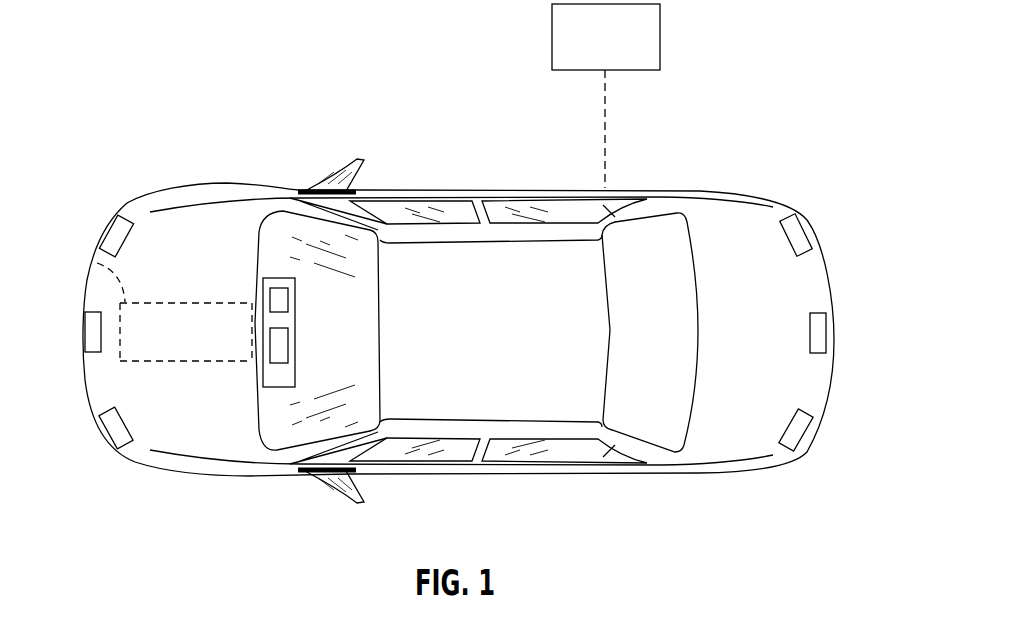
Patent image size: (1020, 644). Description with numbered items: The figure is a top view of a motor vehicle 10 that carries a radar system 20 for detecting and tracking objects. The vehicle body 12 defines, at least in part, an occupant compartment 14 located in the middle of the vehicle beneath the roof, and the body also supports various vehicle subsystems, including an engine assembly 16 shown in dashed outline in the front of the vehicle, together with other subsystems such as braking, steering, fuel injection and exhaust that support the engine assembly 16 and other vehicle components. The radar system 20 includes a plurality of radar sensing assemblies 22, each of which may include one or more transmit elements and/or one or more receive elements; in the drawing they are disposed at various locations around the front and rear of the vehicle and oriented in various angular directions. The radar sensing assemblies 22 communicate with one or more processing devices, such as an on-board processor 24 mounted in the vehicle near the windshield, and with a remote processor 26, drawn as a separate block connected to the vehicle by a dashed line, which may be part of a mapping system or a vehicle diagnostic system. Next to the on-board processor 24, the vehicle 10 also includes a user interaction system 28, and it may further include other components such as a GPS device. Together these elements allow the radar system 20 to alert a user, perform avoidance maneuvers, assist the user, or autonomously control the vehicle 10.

The motor vehicle 10 is at (288, 192).
The vehicle body 12 is at (678, 455).
The occupant compartment 14 is at (538, 408).
The engine assembly 16 is at (90, 260).
The radar system 20 is at (456, 124).
The radar sensing assemblies 22 is at (118, 237).
The on-board processor 24 is at (280, 298).
The remote processor 26 is at (645, 40).
The user interaction system 28 is at (280, 351).